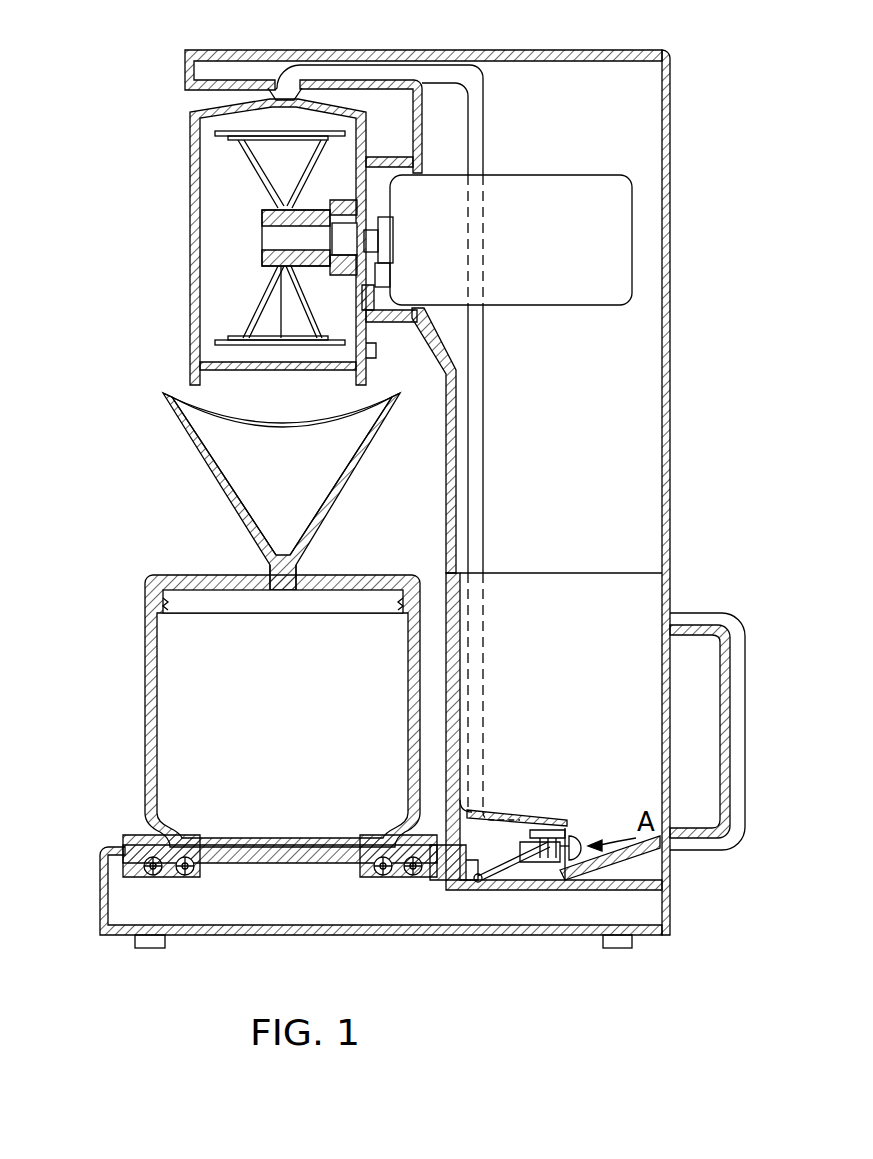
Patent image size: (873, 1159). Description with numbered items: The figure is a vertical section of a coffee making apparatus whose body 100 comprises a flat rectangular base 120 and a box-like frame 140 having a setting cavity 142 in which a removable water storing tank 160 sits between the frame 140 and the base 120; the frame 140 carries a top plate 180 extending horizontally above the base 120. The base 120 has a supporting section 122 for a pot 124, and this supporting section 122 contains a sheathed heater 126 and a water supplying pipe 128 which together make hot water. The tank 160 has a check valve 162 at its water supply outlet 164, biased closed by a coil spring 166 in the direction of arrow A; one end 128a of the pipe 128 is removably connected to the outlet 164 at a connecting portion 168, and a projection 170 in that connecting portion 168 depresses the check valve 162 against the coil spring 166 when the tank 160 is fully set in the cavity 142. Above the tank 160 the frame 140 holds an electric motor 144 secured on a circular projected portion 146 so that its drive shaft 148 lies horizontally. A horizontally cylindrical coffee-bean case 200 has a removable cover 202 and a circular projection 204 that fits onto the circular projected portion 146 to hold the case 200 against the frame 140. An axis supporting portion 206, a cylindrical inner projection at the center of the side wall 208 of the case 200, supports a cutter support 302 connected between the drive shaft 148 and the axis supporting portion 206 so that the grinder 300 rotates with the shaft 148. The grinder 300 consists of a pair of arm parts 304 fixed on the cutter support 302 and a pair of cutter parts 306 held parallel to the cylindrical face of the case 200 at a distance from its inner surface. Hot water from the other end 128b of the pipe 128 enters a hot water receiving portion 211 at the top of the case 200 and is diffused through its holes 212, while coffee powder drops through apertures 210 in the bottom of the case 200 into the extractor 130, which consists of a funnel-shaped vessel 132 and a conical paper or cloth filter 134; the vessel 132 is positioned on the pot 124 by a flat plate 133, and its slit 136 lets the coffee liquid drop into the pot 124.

The body 100 is at (688, 438).
The base 120 is at (100, 897).
The supporting section 122 is at (283, 864).
The pot 124 is at (145, 738).
The sheathed heater 126 is at (185, 876).
The water supplying pipe 128 is at (367, 58).
The one end of the pipe 128a is at (474, 872).
The other end of the pipe 128b is at (300, 96).
The extractor 130 is at (182, 458).
The funnel-shaped vessel 132 is at (228, 503).
The flat plate 133 is at (213, 575).
The filter 134 is at (340, 478).
The slit 136 is at (285, 592).
The frame 140 is at (666, 136).
The setting cavity 142 is at (632, 860).
The electric motor 144 is at (566, 308).
The circular projected portion 146 is at (386, 155).
The drive shaft 148 is at (300, 238).
The water storing tank 160 is at (672, 700).
The check valve 162 is at (578, 840).
The water supply outlet 164 is at (553, 872).
The coil spring 166 is at (546, 836).
The connecting portion 168 is at (500, 818).
The projection 170 is at (526, 866).
The top plate 180 is at (200, 50).
The case 200 is at (383, 100).
The cover 202 is at (190, 264).
The circular projection 204 is at (400, 318).
The axis supporting portion 206 is at (346, 276).
The side wall 208 is at (368, 343).
The apertures 210 is at (258, 400).
The hot water receiving portion 211 is at (272, 131).
The holes 212 is at (300, 140).
The grinder 300 is at (238, 173).
The cutter support 302 is at (276, 300).
The arm parts 304 is at (262, 178).
The cutter parts 306 is at (247, 151).